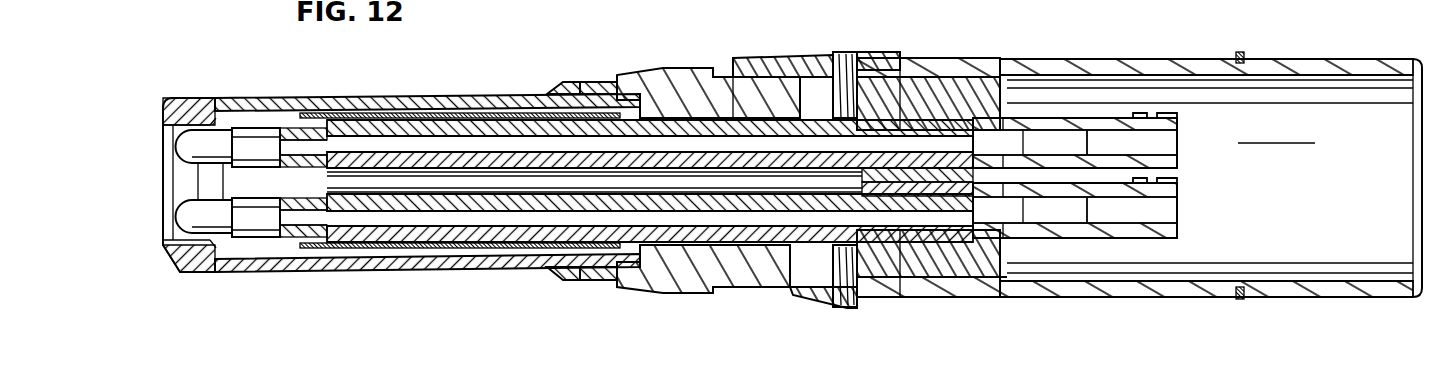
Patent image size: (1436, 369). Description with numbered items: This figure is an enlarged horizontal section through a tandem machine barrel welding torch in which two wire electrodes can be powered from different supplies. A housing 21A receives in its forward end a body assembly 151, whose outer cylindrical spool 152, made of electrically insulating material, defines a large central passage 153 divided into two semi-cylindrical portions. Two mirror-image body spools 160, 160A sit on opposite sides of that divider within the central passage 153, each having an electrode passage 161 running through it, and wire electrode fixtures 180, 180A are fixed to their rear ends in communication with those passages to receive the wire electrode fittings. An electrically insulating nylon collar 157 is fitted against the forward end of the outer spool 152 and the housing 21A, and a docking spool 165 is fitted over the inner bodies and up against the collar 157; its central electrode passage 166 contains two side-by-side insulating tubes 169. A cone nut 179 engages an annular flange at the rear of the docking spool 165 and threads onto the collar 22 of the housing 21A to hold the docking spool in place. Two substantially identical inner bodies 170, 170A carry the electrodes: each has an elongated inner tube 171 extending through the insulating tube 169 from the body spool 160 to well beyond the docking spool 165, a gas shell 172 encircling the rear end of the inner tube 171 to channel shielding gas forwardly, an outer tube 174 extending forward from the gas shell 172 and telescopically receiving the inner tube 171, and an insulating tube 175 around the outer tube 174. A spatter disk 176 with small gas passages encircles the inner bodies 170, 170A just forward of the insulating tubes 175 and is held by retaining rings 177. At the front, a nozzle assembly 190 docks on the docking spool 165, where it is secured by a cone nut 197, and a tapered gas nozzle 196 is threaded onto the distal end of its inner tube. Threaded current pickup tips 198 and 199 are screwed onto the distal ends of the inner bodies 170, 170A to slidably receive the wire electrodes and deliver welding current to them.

The housing 21A is at (1308, 58).
The collar 22 is at (920, 58).
The body assembly 151 is at (990, 277).
The outer cylindrical spool 152 is at (993, 107).
The central passage 153 is at (920, 260).
The electrically insulating collar 157 is at (860, 52).
The body spool 160 is at (1045, 68).
The body spool 160A is at (965, 258).
The electrode passage 161 is at (920, 110).
The docking spool 165 is at (720, 290).
The central electrode passage 166 is at (670, 76).
The electrically insulating cylindrical tube 169 is at (735, 74).
The inner body 170 is at (566, 88).
The inner body 170A is at (523, 243).
The inner tube 171 is at (405, 112).
The gas shell 172 is at (847, 310).
The outer tube 174 is at (367, 133).
The insulating tube 175 is at (476, 112).
The spatter disk 176 is at (312, 128).
The retaining ring 177 is at (298, 128).
The cone nut 179 is at (855, 35).
The wire electrode fixture 180 is at (1177, 133).
The wire electrode fixture 180A is at (1180, 207).
The nozzle assembly 190 is at (480, 272).
The tapered gas nozzle 196 is at (193, 258).
The cone nut 197 is at (597, 74).
The current pickup tip 198 is at (207, 140).
The current pickup tip 199 is at (213, 222).